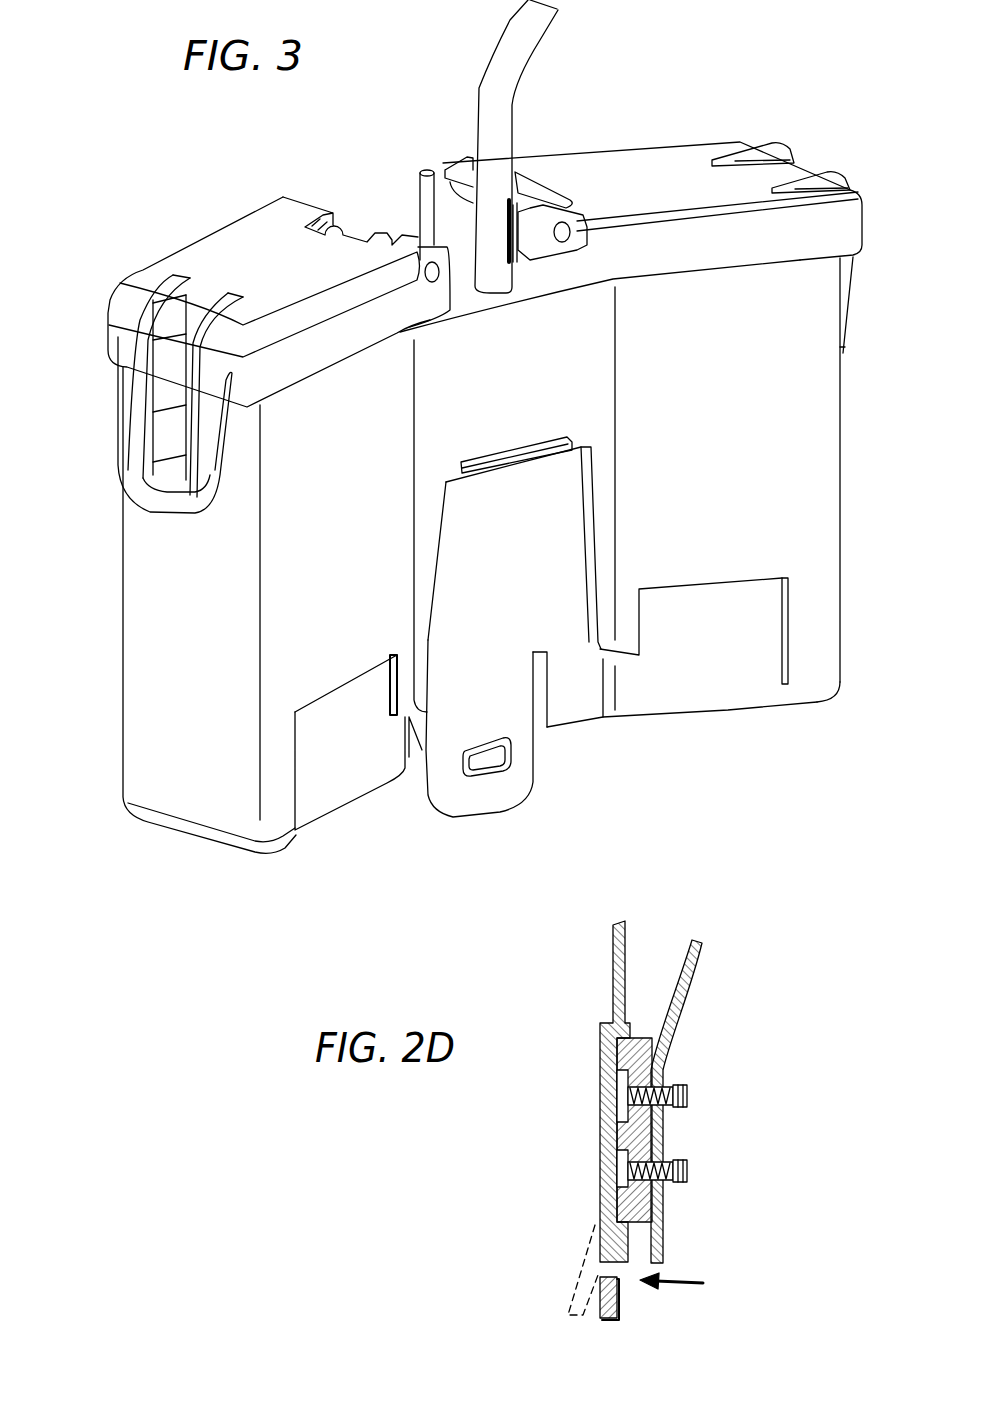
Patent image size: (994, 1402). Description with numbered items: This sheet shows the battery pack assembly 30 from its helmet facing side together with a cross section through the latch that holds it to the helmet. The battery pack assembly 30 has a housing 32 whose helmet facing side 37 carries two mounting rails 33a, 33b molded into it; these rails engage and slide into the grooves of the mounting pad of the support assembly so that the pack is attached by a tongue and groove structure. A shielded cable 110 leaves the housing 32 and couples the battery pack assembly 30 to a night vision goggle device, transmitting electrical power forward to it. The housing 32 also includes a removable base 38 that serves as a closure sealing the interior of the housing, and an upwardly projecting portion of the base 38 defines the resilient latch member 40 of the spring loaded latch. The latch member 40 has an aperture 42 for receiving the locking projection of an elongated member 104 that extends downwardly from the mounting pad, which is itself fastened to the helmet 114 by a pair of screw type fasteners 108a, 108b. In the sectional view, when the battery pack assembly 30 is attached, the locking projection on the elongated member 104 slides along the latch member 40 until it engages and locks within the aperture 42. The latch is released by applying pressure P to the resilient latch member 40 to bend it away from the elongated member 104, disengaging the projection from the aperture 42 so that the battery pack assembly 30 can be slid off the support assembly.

In FIG. 3, the battery pack assembly 30 is at (849, 459).
In FIG. 3, the housing 32 is at (123, 597).
In FIG. 2D, the housing 32 is at (613, 982).
In FIG. 3, the mounting rail 33a is at (440, 557).
In FIG. 3, the mounting rail 33b is at (596, 590).
In FIG. 3, the helmet facing side 37 is at (283, 633).
In FIG. 3, the removable base 38 is at (741, 708).
In FIG. 3, the resilient latch member 40 is at (509, 722).
In FIG. 2D, the resilient latch member 40 is at (617, 1307).
In FIG. 3, the aperture 42 is at (480, 757).
In FIG. 2D, the aperture 42 is at (605, 1272).
In FIG. 2D, the elongated member 104 is at (643, 1022).
In FIG. 2D, the screw type fastener 108a is at (687, 1094).
In FIG. 2D, the screw type fastener 108b is at (687, 1172).
In FIG. 3, the shielded cable 110 is at (518, 55).
In FIG. 2D, the helmet 114 is at (688, 987).
In FIG. 2D, the pressure P is at (682, 1279).